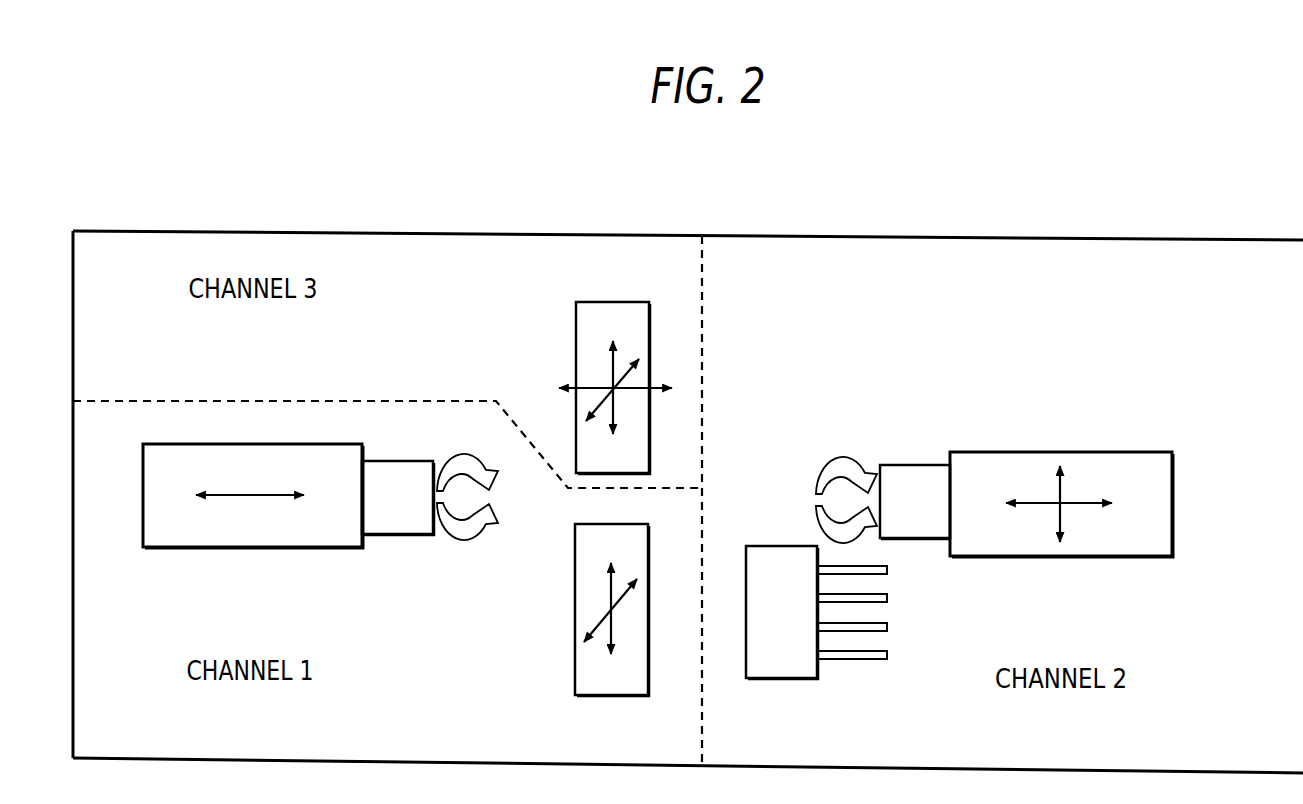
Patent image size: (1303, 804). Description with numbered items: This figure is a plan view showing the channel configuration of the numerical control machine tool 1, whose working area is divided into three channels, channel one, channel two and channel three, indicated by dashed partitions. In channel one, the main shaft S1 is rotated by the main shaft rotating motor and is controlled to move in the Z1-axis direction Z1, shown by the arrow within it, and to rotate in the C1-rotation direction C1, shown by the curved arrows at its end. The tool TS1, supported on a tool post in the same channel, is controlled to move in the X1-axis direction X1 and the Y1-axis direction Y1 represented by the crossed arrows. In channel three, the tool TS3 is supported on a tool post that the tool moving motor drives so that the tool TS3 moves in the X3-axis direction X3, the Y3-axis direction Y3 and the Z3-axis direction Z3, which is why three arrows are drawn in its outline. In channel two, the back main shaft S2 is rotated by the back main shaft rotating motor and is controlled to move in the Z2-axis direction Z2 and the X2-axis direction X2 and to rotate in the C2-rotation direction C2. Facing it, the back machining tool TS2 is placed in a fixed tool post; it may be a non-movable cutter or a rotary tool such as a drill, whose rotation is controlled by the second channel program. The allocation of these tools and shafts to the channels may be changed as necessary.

The numerical control machine tool 1 is at (1017, 236).
The main shaft S1 is at (250, 549).
The Z1-axis direction Z1 is at (250, 514).
The C1-rotation direction C1 is at (467, 516).
The tool TS1 is at (610, 697).
The X1-axis direction X1 is at (610, 627).
The Y1-axis direction Y1 is at (588, 621).
The tool TS3 is at (612, 302).
The X3-axis direction X3 is at (611, 403).
The Y3-axis direction Y3 is at (589, 401).
The Z3-axis direction Z3 is at (597, 386).
The back main shaft S2 is at (1058, 558).
The Z2-axis direction Z2 is at (1074, 520).
The X2-axis direction X2 is at (1061, 480).
The C2-rotation direction C2 is at (846, 480).
The back machining tool TS2 is at (780, 680).